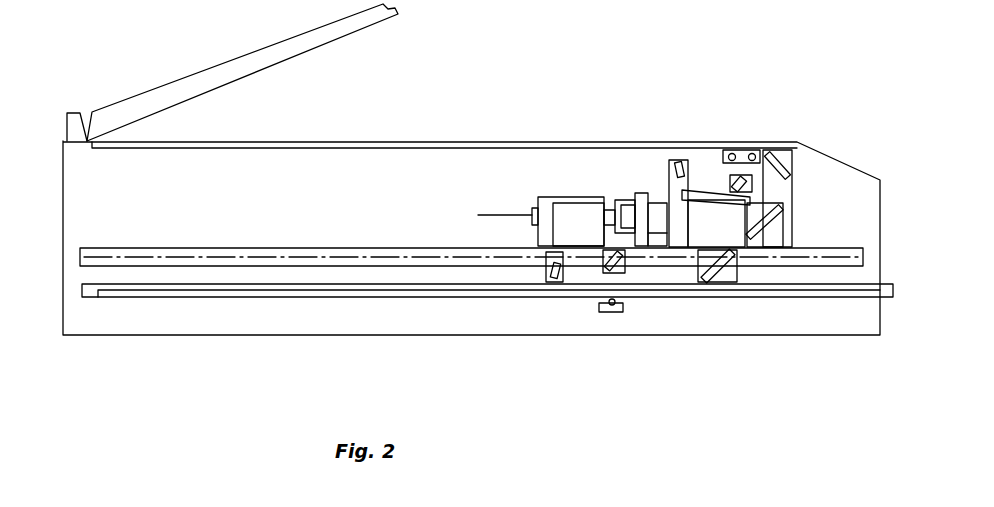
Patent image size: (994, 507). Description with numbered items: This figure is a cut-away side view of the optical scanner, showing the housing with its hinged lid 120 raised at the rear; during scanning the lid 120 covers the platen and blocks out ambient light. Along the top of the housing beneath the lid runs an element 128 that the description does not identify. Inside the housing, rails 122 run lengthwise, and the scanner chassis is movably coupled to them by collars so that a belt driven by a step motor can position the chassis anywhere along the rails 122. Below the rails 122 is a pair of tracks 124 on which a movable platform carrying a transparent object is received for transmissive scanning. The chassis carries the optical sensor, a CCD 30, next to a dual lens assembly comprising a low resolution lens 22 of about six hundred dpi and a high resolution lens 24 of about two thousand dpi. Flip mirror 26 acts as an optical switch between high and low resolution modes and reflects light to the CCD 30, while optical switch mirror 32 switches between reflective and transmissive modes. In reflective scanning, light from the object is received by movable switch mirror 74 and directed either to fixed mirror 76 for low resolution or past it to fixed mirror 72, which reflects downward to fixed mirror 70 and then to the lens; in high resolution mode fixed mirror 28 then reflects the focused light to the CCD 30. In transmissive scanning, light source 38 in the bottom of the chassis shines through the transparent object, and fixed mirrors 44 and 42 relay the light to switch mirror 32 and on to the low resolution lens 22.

The lid 120 is at (277, 62).
The platen glass 128 is at (440, 141).
The rails 122 is at (232, 248).
The tracks 124 is at (233, 300).
The flip mirror 26 is at (563, 197).
The fixed mirror 28 is at (575, 218).
The CCD 30 is at (492, 216).
The low resolution lens 22 is at (623, 205).
The high resolution lens 24 is at (658, 222).
The fixed mirror 76 is at (680, 165).
The optical switch mirror 32 is at (702, 195).
The movable switch mirror 74 is at (748, 178).
The fixed mirror 72 is at (795, 144).
The fixed mirror 70 is at (785, 221).
The fixed mirror 44 is at (553, 273).
The light source 38 is at (620, 312).
The fixed mirror 42 is at (717, 267).